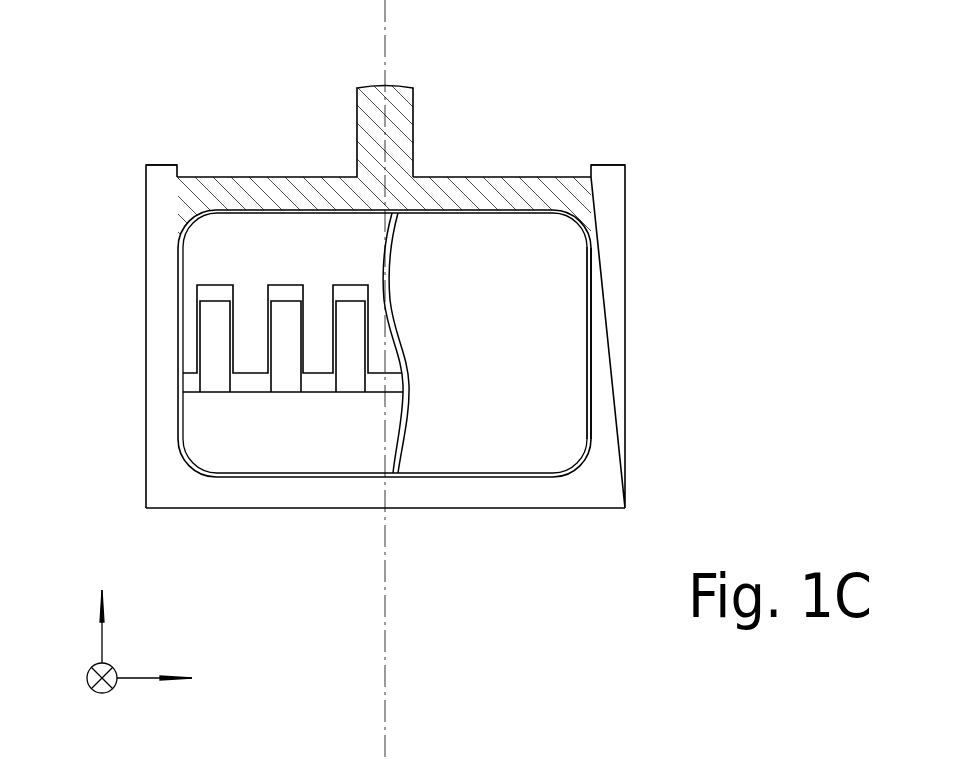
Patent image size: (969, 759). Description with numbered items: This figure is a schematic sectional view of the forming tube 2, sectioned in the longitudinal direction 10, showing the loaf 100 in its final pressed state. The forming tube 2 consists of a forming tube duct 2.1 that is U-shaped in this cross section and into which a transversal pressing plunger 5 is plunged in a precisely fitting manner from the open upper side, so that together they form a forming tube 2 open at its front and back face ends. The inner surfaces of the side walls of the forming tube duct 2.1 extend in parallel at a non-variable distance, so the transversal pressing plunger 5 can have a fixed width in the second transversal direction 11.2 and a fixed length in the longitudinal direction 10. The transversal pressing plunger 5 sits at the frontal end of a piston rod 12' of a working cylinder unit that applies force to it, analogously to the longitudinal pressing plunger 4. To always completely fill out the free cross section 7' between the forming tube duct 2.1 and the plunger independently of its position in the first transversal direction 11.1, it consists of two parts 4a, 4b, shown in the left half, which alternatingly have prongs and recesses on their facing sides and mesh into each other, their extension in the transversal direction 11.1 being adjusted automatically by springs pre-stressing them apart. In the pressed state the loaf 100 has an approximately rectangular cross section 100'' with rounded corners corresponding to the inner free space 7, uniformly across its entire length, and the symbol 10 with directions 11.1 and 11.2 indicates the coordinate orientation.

The forming tube 2 is at (203, 118).
The forming tube duct 2.1 is at (612, 388).
The longitudinal pressing plunger 4 is at (181, 337).
The first part of the transversal pressing plunger 4a is at (287, 234).
The second part of the transversal pressing plunger 4b is at (288, 445).
The transversal pressing plunger 5 is at (542, 183).
The inner free space 7 is at (628, 343).
The free cross section 7' is at (630, 343).
The longitudinal direction 10 is at (92, 692).
The first transversal direction 11.1 is at (102, 643).
The second transversal direction 11.2 is at (137, 677).
The piston rod 12' is at (420, 132).
The loaf 100 is at (384, 343).
The cross section of the loaf 100'' is at (460, 343).